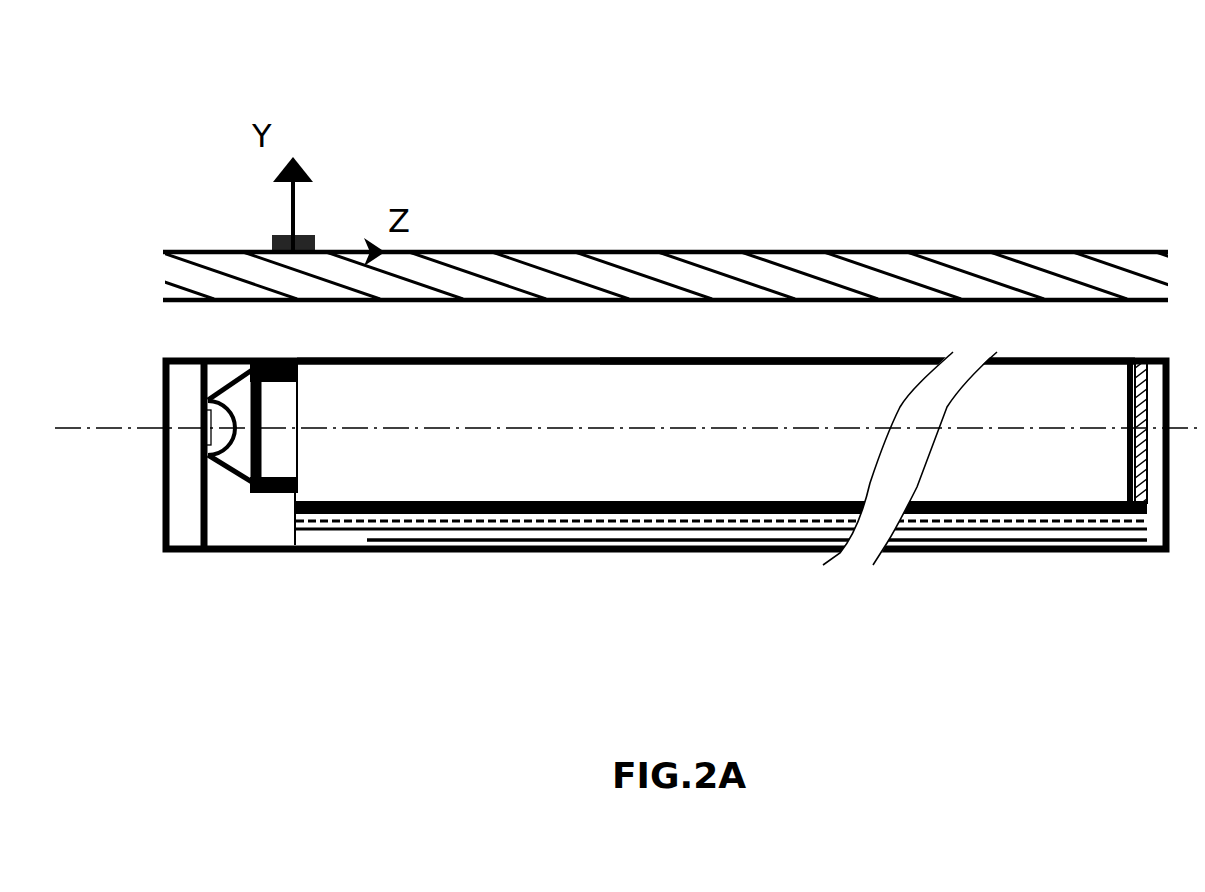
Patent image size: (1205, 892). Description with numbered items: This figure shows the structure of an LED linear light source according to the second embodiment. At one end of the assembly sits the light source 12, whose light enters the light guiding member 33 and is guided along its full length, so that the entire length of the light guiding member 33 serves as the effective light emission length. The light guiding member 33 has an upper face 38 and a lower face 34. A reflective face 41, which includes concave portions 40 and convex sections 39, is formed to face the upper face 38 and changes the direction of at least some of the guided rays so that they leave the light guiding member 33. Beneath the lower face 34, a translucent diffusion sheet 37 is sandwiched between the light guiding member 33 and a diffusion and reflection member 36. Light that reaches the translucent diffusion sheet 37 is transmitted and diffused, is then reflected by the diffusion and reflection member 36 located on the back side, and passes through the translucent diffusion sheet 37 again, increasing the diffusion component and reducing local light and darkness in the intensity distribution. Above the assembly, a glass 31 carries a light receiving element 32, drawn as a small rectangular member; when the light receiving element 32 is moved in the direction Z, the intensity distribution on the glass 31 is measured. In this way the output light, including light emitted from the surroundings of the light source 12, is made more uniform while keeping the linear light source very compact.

The light source 12 is at (247, 508).
The glass 31 is at (930, 250).
The light receiving element 32 is at (313, 247).
The light guiding member 33 is at (740, 360).
The lower face 34 is at (420, 507).
The diffusion and reflection member 36 is at (552, 540).
The translucent diffusion sheet 37 is at (490, 521).
The upper face 38 is at (478, 360).
The convex sections 39 is at (830, 549).
The concave portions 40 is at (697, 543).
The reflective face 41 is at (817, 612).